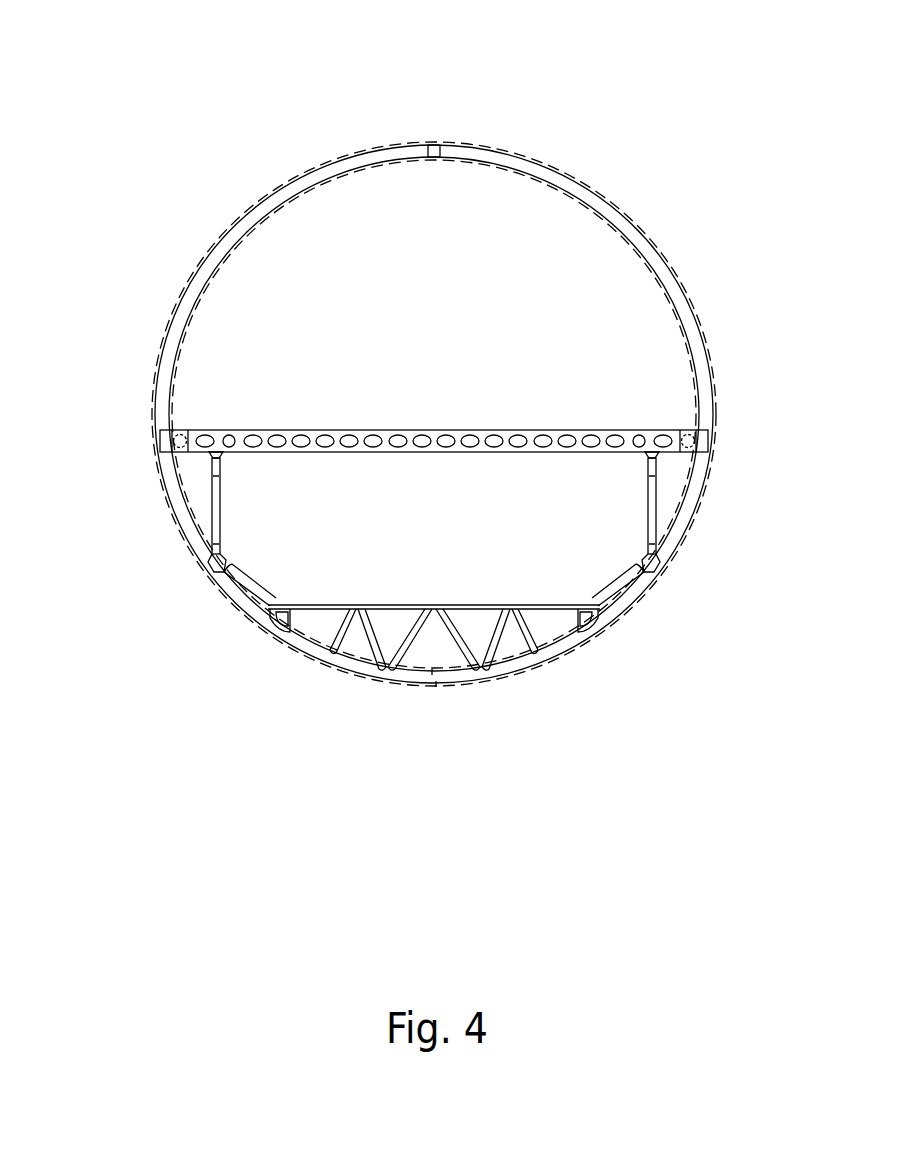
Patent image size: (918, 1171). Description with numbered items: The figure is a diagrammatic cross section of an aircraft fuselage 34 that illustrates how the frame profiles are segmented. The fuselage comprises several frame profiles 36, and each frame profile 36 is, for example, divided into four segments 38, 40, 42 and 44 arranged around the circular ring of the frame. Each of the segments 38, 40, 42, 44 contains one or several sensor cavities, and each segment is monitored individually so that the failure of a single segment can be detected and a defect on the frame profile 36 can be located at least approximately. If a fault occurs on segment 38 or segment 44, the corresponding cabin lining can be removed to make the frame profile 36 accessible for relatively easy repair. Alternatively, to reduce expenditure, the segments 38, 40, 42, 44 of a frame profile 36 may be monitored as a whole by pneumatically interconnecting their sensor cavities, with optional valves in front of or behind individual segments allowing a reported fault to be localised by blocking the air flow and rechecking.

The fuselage section 34 is at (410, 121).
The frame profile 36 is at (185, 518).
The segment 38 is at (631, 223).
The segment 40 is at (665, 565).
The segment 42 is at (197, 562).
The segment 44 is at (208, 253).